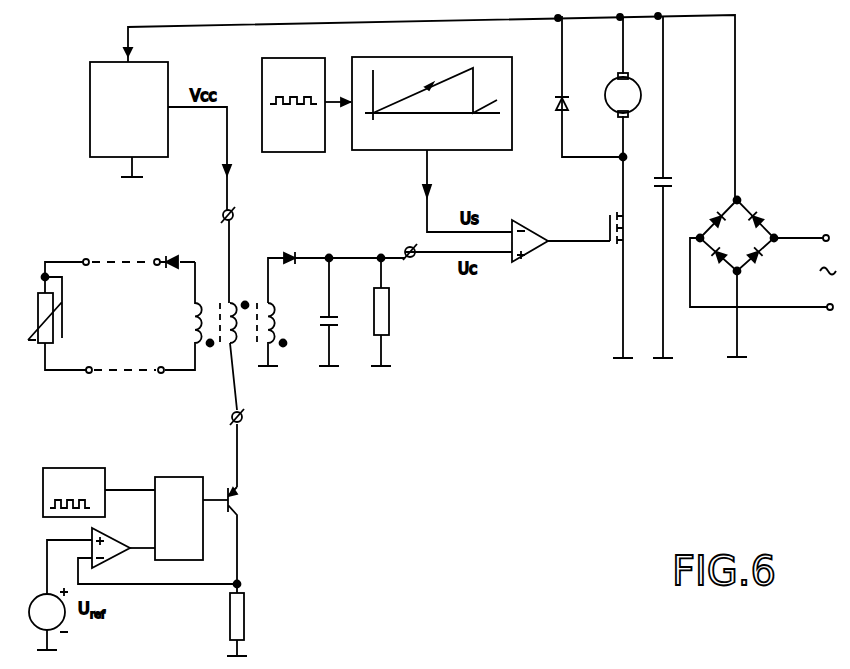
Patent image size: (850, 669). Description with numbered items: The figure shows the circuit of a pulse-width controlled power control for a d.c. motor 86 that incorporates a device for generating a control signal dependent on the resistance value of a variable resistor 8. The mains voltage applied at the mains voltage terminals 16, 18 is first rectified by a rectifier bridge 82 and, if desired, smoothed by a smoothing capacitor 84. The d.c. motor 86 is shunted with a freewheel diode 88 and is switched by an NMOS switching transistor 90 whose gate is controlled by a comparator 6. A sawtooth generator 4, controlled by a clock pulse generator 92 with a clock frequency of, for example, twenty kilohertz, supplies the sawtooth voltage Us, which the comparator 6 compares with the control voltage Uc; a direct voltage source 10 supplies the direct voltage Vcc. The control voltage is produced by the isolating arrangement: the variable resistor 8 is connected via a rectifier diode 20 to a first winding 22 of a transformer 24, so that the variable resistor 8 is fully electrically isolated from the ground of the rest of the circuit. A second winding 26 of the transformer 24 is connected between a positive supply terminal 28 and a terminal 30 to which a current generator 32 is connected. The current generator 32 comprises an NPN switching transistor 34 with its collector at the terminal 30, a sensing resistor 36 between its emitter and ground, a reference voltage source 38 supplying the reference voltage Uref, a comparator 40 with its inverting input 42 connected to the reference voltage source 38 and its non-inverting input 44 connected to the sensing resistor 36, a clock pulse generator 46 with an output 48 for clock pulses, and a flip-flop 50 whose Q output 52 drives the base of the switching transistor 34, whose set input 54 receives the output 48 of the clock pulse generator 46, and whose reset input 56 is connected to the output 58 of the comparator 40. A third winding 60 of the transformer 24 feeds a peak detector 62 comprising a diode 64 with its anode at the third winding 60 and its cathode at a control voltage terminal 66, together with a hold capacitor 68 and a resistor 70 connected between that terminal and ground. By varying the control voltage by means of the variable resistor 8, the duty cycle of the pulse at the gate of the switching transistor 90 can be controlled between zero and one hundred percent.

The sawtooth generator 4 is at (512, 62).
The comparator 6 is at (536, 250).
The variable resistor 8 is at (60, 335).
The direct voltage source 10 is at (168, 68).
The mains voltage terminal 16 is at (826, 235).
The mains voltage terminal 18 is at (830, 310).
The rectifier diode 20 is at (166, 258).
The first winding 22 is at (192, 328).
The transformer 24 is at (218, 366).
The second winding 26 is at (236, 342).
The positive supply terminal 28 is at (234, 213).
The terminal 30 is at (243, 416).
The current generator 32 is at (155, 641).
The NPN switching transistor 34 is at (238, 488).
The sensing resistor 36 is at (244, 616).
The reference voltage source 38 is at (44, 634).
The comparator 40 is at (124, 559).
The inverting input 42 is at (90, 534).
The non-inverting input 44 is at (78, 558).
The clock pulse generator 46 is at (75, 468).
The output 48 is at (108, 486).
The flip-flop 50 is at (173, 477).
The Q output 52 is at (209, 495).
The set input 54 is at (151, 503).
The reset input 56 is at (156, 562).
The output 58 is at (138, 546).
The third winding 60 is at (276, 322).
The peak detector 62 is at (366, 272).
The diode 64 is at (290, 252).
The control voltage terminal 66 is at (410, 258).
The hold capacitor 68 is at (333, 330).
The resistor 70 is at (385, 316).
The rectifier bridge 82 is at (737, 277).
The smoothing capacitor 84 is at (671, 178).
The d.c. motor 86 is at (626, 86).
The freewheel diode 88 is at (566, 110).
The NMOS switching transistor 90 is at (610, 250).
The clock pulse generator 92 is at (311, 152).